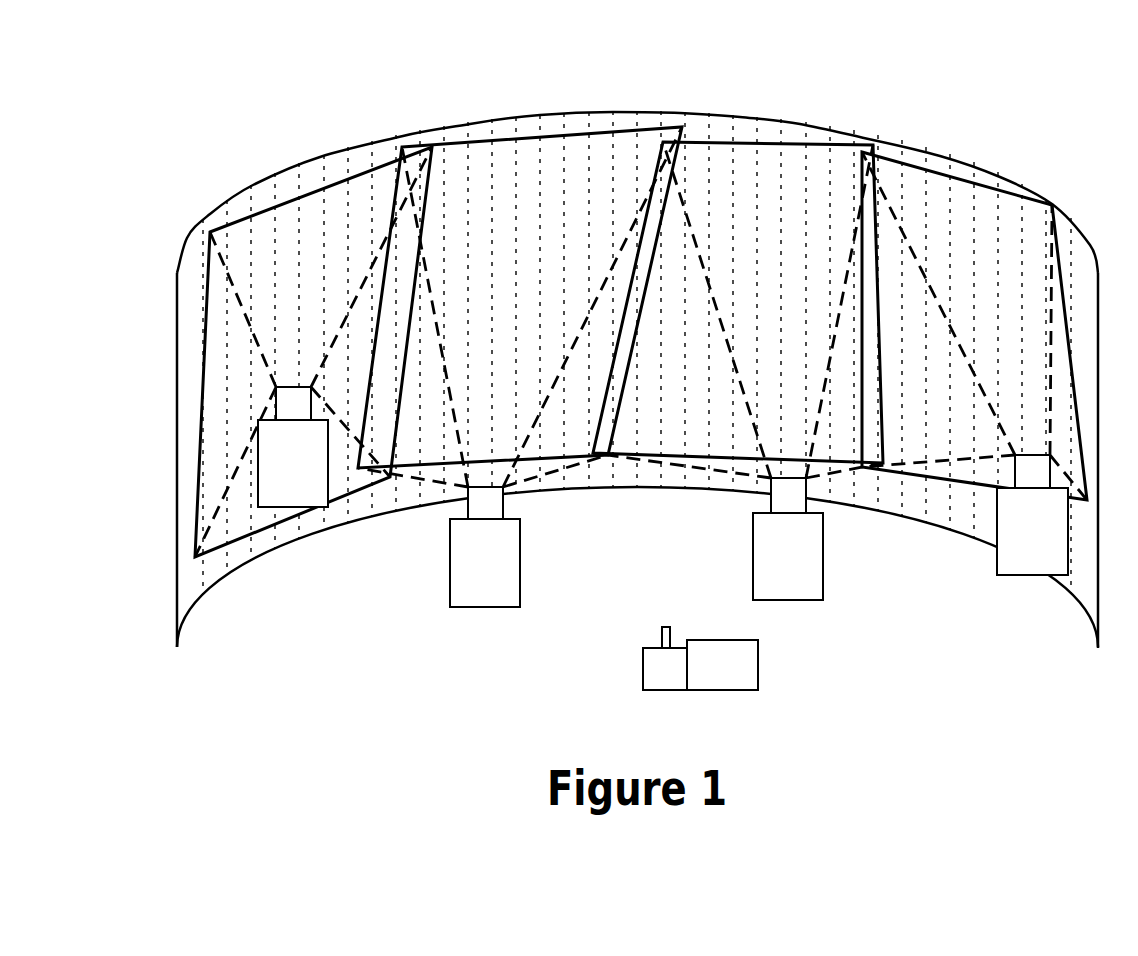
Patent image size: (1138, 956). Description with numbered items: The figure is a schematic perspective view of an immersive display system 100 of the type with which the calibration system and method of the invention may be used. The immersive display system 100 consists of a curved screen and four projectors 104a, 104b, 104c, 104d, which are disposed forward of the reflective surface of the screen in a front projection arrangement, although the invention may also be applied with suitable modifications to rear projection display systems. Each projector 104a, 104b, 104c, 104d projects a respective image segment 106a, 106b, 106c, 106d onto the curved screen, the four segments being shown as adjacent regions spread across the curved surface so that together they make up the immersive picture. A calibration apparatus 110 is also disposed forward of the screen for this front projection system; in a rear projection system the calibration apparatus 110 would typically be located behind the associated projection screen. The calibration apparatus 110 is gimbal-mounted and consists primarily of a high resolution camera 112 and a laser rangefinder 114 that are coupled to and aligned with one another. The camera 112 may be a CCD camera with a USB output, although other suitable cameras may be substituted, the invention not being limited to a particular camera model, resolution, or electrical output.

The immersive display system 100 is at (291, 90).
The projector 104a is at (308, 495).
The projector 104b is at (463, 595).
The projector 104c is at (804, 590).
The projector 104d is at (1033, 563).
The image segment 106a is at (314, 205).
The image segment 106b is at (555, 147).
The image segment 106c is at (769, 152).
The image segment 106d is at (985, 198).
The calibration apparatus 110 is at (710, 639).
The high resolution camera 112 is at (655, 671).
The laser rangefinder 114 is at (735, 675).